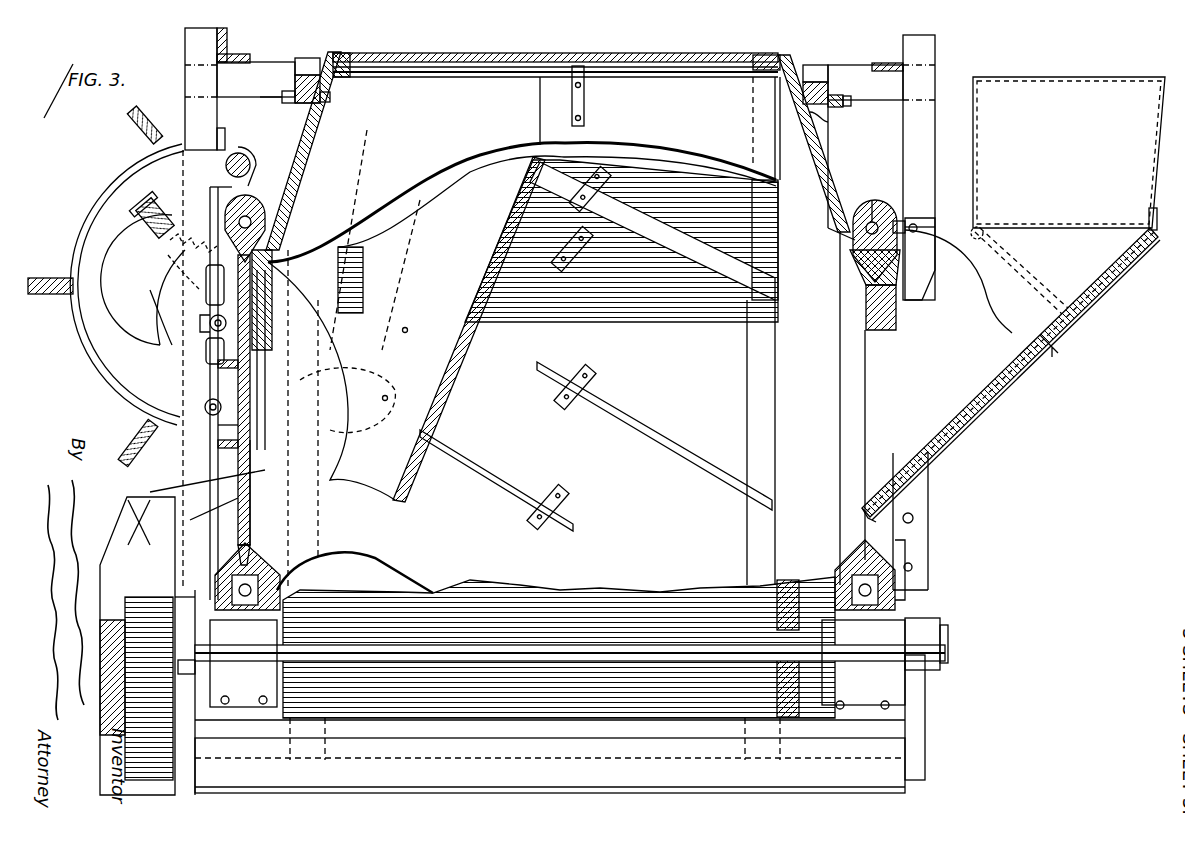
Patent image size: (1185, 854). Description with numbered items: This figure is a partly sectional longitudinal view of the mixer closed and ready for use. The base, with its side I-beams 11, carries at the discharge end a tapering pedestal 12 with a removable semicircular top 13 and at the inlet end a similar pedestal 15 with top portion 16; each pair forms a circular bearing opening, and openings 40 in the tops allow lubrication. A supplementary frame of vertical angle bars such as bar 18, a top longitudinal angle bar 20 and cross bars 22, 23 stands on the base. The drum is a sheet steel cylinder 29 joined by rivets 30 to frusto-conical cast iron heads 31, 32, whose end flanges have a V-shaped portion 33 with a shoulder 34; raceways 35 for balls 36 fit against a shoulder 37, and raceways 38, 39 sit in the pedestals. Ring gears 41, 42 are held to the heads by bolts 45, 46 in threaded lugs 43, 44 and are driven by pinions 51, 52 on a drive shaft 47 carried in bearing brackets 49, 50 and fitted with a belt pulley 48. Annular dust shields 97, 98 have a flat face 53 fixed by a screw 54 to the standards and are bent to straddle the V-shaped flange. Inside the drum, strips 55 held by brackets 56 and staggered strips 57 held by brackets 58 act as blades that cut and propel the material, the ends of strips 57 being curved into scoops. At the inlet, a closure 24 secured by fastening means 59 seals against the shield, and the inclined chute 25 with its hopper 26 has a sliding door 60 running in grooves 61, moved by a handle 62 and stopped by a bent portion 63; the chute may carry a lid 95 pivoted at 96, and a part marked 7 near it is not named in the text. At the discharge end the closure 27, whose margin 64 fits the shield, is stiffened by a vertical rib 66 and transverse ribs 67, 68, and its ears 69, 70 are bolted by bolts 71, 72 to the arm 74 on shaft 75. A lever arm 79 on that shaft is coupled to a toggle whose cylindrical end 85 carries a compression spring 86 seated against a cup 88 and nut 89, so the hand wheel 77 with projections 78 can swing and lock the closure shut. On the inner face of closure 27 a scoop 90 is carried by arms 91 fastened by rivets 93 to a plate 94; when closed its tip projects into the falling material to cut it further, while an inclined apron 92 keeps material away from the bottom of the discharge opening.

The chute plate 7 is at (976, 306).
The side I-beams 11 is at (582, 765).
The supporting bracket or pedestal 12 is at (550, 742).
The upper removable semi-circular portion 13 is at (252, 218).
The pedestal or bracket 15 is at (935, 573).
The semicircular top portion 16 is at (929, 237).
The vertical angle bar 18 is at (179, 304).
The longitudinally connecting angle bar 20 is at (263, 58).
The cross connecting bar 22 is at (237, 41).
The cross connecting bar 23 is at (513, 411).
The closure 24 is at (939, 521).
The inclined inlet chute 25 is at (1010, 372).
The funnel shaped inlet 26 is at (1069, 132).
The closure or dust shield 27 is at (212, 512).
The sheet steel cylinder portion 29 is at (555, 50).
The rivets 30 is at (591, 129).
The cast iron head portion 31 is at (851, 172).
The cast iron head portion 32 is at (330, 201).
The V-shaped portion 33 is at (838, 408).
The shoulder 34 is at (844, 241).
The raceways 35 is at (590, 400).
The balls 36 is at (531, 205).
The shoulder 37 is at (844, 267).
The ball raceway 38 is at (873, 700).
The ball raceway 39 is at (243, 663).
The openings 40 is at (543, 382).
The ring gear 41 is at (853, 84).
The ring gear 42 is at (318, 65).
The screw threaded lug 43 is at (853, 123).
The screw threaded lug 44 is at (287, 111).
The screw threaded bolt 45 is at (854, 104).
The screw threaded bolt 46 is at (275, 102).
The drive shaft 47 is at (550, 659).
The belt pulley 48 is at (124, 506).
The bracket 49 is at (600, 644).
The bracket 50 is at (160, 688).
The pinion 51 is at (781, 508).
The pinion 52 is at (355, 559).
The flat face 53 is at (915, 581).
The screw 54 is at (957, 211).
The sheet metal strips 55 is at (622, 267).
The brackets 56 is at (598, 218).
The metal strips 57 is at (522, 299).
The brackets 58 is at (575, 377).
The fastening means 59 is at (939, 542).
The rear or lower wall 60 is at (1016, 380).
The grooves 61 is at (941, 469).
The handle 62 is at (1069, 347).
The bent portion 63 is at (1161, 230).
The margin 64 is at (232, 571).
The vertical strengthening rib 66 is at (207, 479).
The transverse strengthening rib 67 is at (210, 373).
The transverse strengthening rib 68 is at (277, 465).
The projecting ear or flange 69 is at (171, 304).
The projecting ear or flange 70 is at (161, 413).
The bolt 71 is at (186, 325).
The bolt 72 is at (211, 436).
The parallel arm 74 is at (155, 297).
The shaft 75 is at (256, 166).
The hand operating wheel 77 is at (109, 284).
The radial projections 78 is at (95, 286).
The lever arm 79 is at (207, 155).
The reduced cylindrical end 85 is at (167, 262).
The coiled compression spring 86 is at (137, 316).
The cup 88 is at (110, 284).
The nut 89 is at (121, 203).
The movable chute or scoop 90 is at (437, 316).
The arms 91 is at (523, 340).
The metal apron 92 is at (273, 517).
The bolts or rivets 93 is at (364, 365).
The plate 94 is at (287, 420).
The closure 95 is at (1021, 271).
The pivot 96 is at (985, 253).
The dust shield 97 is at (865, 564).
The dust shield 98 is at (219, 580).